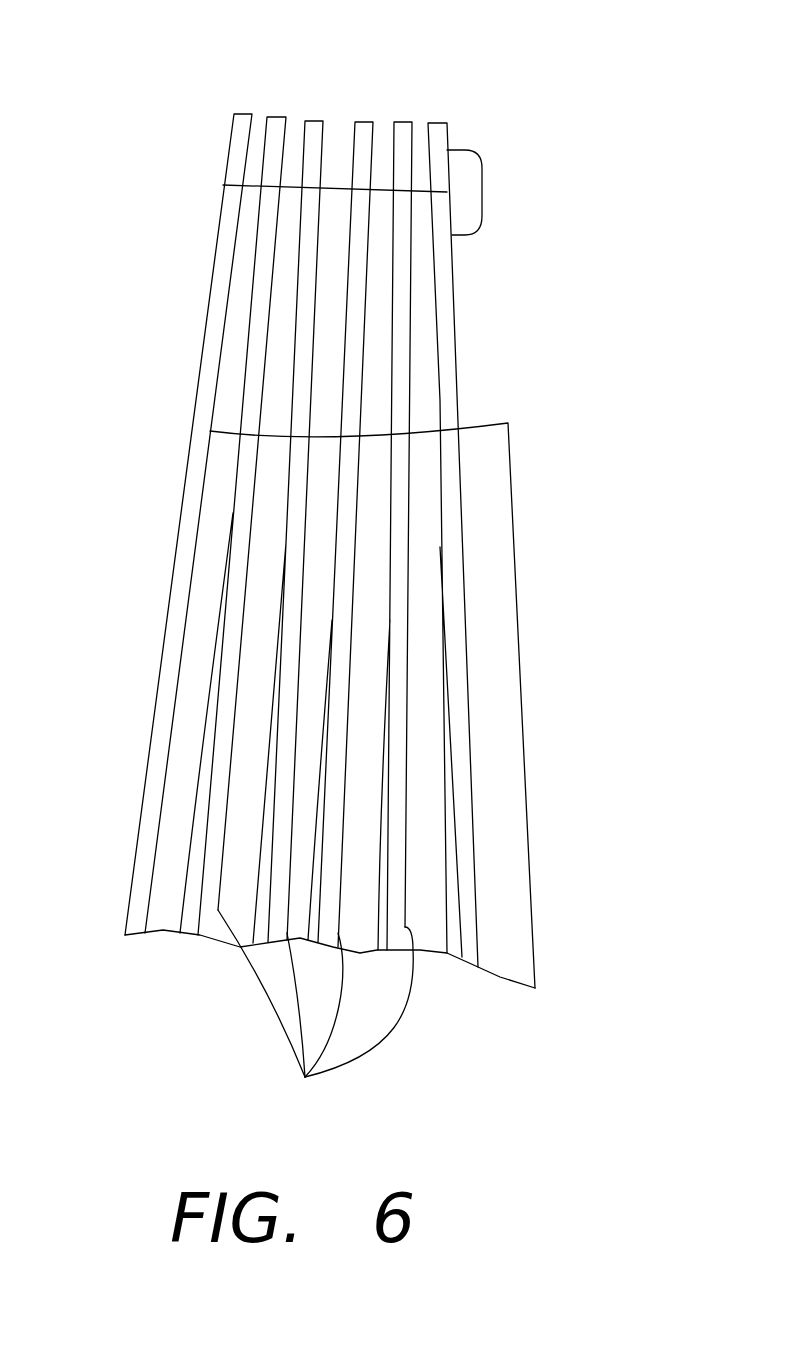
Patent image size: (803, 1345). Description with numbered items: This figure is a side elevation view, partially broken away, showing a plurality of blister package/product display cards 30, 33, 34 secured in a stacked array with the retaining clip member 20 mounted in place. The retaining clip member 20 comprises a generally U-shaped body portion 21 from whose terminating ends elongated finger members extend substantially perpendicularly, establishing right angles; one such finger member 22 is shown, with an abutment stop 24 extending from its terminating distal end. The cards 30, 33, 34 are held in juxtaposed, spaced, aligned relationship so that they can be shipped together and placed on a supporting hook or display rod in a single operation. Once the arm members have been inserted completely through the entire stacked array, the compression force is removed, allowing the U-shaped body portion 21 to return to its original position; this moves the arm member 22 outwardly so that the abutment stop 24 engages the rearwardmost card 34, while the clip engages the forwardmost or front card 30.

The retaining clip member 20 is at (508, 172).
The U-shaped body portion 21 is at (452, 235).
The finger member 22 is at (337, 188).
The abutment stop 24 is at (223, 185).
The blister package/product display card 30 is at (372, 660).
The blister package/product display card 33 is at (315, 1015).
The blister package/product display card 34 is at (195, 393).